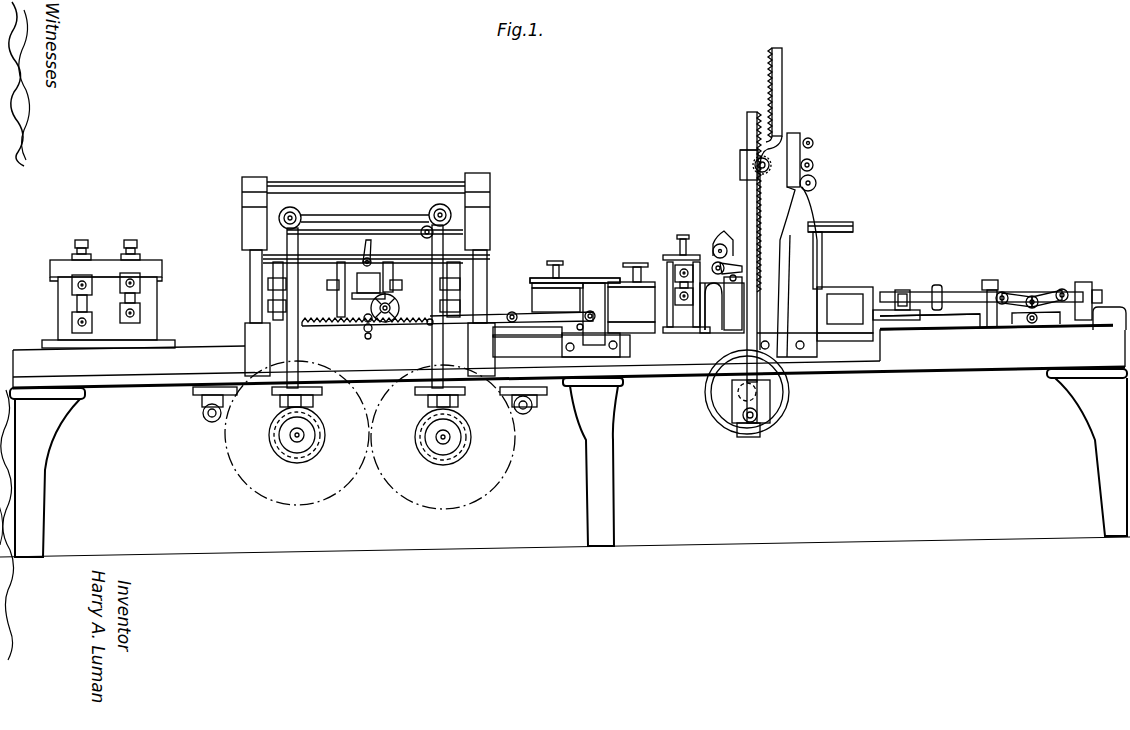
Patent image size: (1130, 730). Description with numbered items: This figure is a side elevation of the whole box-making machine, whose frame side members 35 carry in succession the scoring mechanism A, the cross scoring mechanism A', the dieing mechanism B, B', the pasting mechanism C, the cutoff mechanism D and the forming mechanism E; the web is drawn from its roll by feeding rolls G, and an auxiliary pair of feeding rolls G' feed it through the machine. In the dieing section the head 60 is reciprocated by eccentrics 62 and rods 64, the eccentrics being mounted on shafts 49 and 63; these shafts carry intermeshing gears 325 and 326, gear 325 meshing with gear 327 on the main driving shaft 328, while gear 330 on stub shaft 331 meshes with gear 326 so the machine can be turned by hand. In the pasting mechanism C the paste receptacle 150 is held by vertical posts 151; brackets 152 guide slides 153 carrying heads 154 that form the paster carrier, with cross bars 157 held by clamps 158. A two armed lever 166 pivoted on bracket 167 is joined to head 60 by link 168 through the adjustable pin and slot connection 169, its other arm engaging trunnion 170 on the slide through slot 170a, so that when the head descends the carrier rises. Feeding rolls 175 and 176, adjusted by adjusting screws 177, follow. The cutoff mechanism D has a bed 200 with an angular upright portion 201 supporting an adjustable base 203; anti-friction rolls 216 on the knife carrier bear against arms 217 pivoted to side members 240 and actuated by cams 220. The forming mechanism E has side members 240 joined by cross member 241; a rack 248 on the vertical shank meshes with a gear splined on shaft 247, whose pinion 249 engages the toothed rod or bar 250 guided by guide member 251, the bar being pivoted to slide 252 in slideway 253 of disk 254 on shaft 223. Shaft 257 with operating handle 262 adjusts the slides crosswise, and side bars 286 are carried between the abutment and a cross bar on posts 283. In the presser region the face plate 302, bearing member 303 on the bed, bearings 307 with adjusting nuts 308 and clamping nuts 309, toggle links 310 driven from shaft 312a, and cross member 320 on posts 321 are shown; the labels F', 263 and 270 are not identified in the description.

The side members 35 is at (675, 373).
The slot 170a is at (613, 390).
The scoring mechanism A is at (108, 279).
The feeding rolls G is at (142, 245).
The cross scoring mechanism A' is at (348, 274).
The head 60 is at (400, 232).
The rods 64 is at (293, 332).
The pin and slot connection 169 is at (428, 326).
The dieing mechanism B is at (382, 289).
The link 168 is at (392, 302).
The eccentrics 62 is at (290, 427).
The shaft 49 is at (297, 445).
The shaft 63 is at (443, 445).
The gear 325 is at (340, 492).
The gear 326 is at (480, 478).
The shaft 328 is at (203, 413).
The gear 327 is at (208, 422).
The stub shaft 331 is at (513, 405).
The gear 330 is at (530, 413).
The pasting mechanism C is at (564, 306).
The dieing mechanism B' is at (540, 266).
The cross bars 157 is at (552, 270).
The heads 154 is at (605, 280).
The slides 153 is at (590, 296).
The paste receptacle 150 is at (631, 302).
The clamps 158 is at (638, 262).
The bracket 167 is at (525, 305).
The two armed lever 166 is at (545, 320).
The vertical posts 151 is at (590, 322).
The brackets 152 is at (578, 330).
The trunnion 170 is at (615, 328).
The feeding roll 175 is at (688, 310).
The bed 200 is at (725, 325).
The auxiliary feeding rolls G' is at (678, 265).
The feeding roll 176 is at (670, 268).
The adjusting screws 177 is at (683, 237).
The cutoff mechanism D is at (725, 267).
The cams 220 is at (732, 242).
The arms 217 is at (728, 265).
The anti-friction rolls 216 is at (740, 284).
The base 203 is at (740, 302).
The angular upright portion 201 is at (722, 318).
The rod or bar 250 is at (747, 112).
The rack 248 is at (768, 72).
The shaft 247 is at (745, 165).
The pinion 249 is at (767, 158).
The guide member 251 is at (742, 160).
The cross member 241 is at (800, 140).
The side members 240 is at (797, 203).
The operating handle 262 is at (811, 145).
The shaft 257 is at (813, 165).
The forming mechanism E is at (830, 214).
The arm 263 is at (853, 225).
The post 270 is at (822, 246).
The side bars 286 is at (873, 291).
The mechanism F' is at (924, 284).
The face plate 302 is at (823, 317).
The posts 283 is at (865, 322).
The slideway 253 is at (772, 395).
The disk 254 is at (774, 407).
The slide 252 is at (750, 437).
The shaft 223 is at (738, 395).
The bearings 307 is at (918, 306).
The adjusting nuts 308 is at (905, 290).
The clamping nuts 309 is at (941, 288).
The posts 321 is at (992, 328).
The cross member 320 is at (997, 282).
The toggle links 310 is at (1034, 297).
The shaft 312a is at (1036, 323).
The bearing member 303 is at (1093, 275).